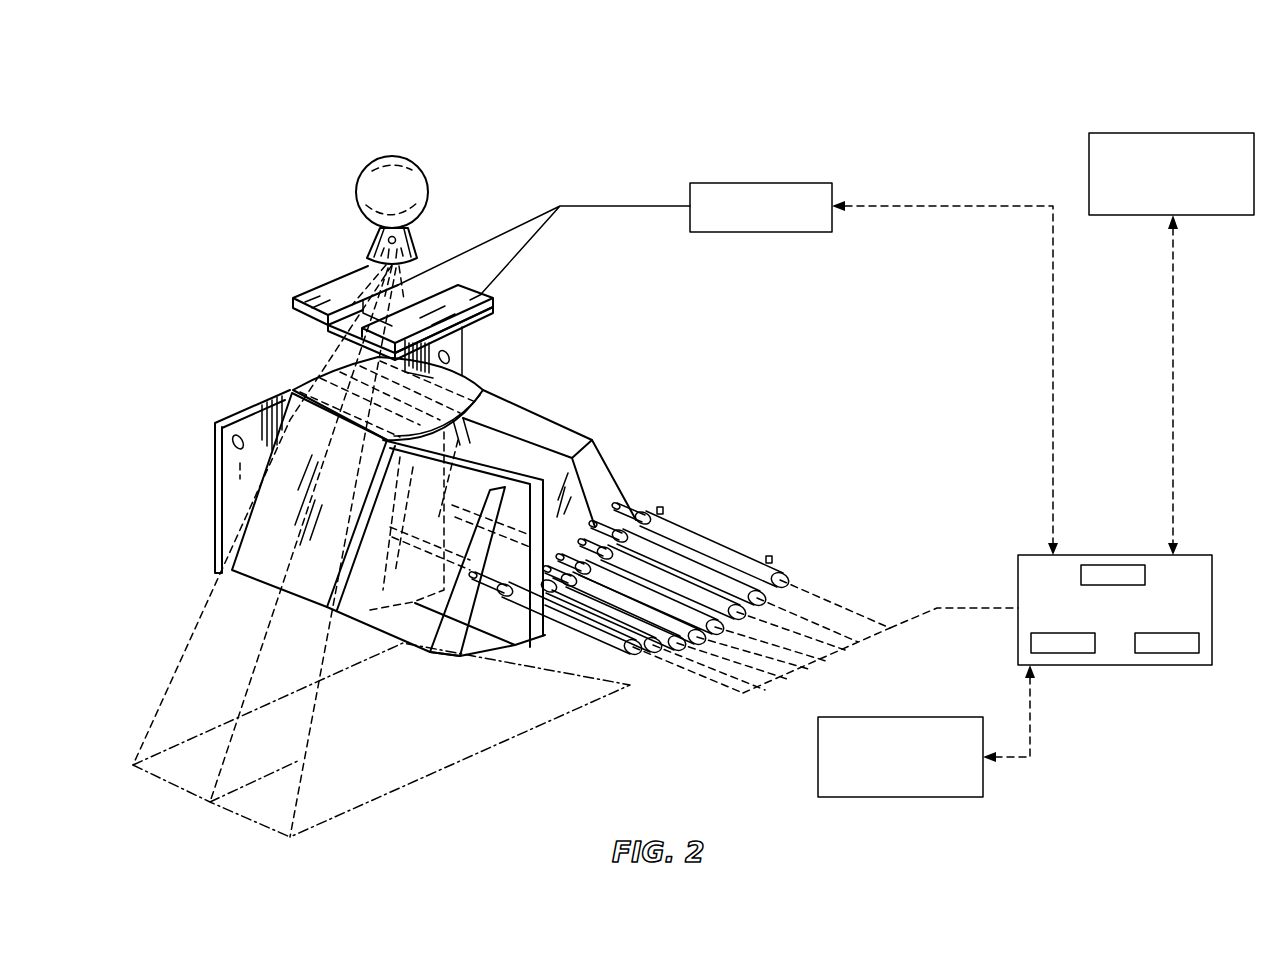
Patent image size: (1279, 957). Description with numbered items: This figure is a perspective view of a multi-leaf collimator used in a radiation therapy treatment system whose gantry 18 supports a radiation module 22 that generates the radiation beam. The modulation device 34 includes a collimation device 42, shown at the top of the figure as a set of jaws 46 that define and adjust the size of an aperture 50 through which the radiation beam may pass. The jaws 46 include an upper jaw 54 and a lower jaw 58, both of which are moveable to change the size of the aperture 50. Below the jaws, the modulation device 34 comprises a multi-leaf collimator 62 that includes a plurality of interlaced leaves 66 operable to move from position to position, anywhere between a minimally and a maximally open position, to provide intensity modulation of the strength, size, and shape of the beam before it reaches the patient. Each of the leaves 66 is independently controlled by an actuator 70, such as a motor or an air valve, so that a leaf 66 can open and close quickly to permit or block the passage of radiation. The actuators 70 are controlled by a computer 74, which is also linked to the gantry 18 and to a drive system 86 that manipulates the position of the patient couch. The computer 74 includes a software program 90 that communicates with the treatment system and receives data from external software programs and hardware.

The gantry 18 is at (1137, 133).
The radiation module 22 is at (378, 178).
The modulation device 34 is at (658, 326).
The collimation device 42 is at (547, 120).
The jaws 46 is at (296, 227).
The aperture 50 is at (337, 330).
The upper jaw 54 is at (308, 296).
The lower jaw 58 is at (430, 283).
The multi-leaf collimator 62 is at (484, 388).
The interlaced leaves 66 is at (600, 468).
The actuator 70 is at (723, 183).
The computer 74 is at (1137, 624).
The drive system 86 is at (917, 797).
The software program 90 is at (1158, 647).